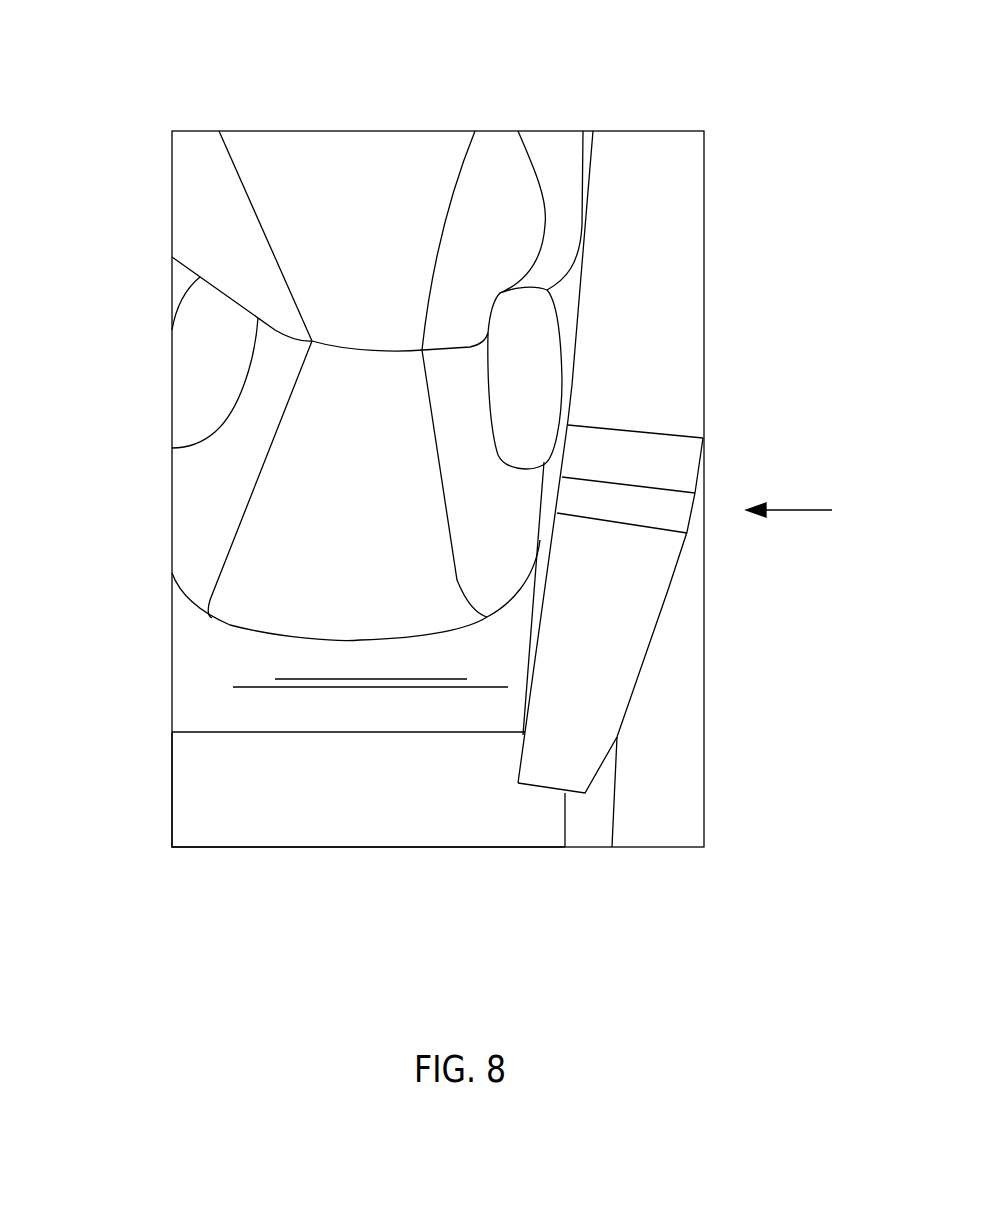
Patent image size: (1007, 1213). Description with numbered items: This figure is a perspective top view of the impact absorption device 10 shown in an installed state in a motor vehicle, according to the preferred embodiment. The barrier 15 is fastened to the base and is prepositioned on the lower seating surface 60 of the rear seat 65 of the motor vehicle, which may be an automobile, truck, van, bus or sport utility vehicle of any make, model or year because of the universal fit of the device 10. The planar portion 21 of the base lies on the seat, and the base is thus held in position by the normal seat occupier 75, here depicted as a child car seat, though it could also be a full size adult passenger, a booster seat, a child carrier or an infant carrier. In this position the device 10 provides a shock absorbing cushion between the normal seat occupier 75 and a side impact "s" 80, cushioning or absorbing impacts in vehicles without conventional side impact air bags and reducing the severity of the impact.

The impact absorption device 10 is at (598, 103).
The barrier 15 is at (647, 470).
The planar portion 21 is at (324, 712).
The lower seating surface 60 is at (191, 609).
The rear seat 65 is at (208, 793).
The normal seat occupier 75 is at (223, 485).
The side impact "s" 80 is at (798, 510).